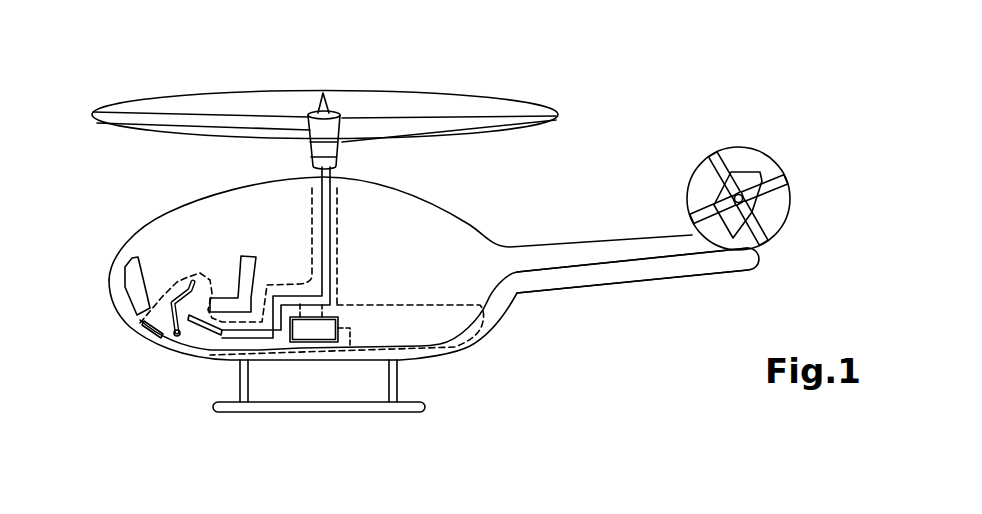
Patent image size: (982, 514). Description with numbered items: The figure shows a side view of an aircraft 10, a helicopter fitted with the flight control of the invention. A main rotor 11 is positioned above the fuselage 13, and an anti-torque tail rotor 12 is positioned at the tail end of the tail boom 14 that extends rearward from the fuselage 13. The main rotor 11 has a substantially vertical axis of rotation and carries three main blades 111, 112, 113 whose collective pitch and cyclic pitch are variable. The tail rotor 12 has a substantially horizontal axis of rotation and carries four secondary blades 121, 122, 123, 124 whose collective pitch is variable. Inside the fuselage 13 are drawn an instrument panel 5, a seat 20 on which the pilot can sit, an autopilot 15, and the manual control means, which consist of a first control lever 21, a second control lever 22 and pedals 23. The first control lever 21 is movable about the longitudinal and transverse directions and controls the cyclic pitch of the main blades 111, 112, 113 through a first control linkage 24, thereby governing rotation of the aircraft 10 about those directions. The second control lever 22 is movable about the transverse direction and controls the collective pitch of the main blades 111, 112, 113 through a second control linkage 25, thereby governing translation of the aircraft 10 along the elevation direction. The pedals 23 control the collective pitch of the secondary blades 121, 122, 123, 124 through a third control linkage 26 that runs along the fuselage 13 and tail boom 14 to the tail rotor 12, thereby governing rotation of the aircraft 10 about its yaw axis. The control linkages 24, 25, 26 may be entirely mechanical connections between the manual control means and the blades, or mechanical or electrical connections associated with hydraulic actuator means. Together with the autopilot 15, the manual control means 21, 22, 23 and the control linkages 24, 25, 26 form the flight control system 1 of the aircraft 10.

The flight control system 1 is at (425, 305).
The instrument panel 5 is at (128, 280).
The aircraft 10 is at (369, 423).
The main rotor 11 is at (492, 98).
The main blade 111 is at (128, 118).
The main blade 112 is at (477, 134).
The main blade 113 is at (322, 92).
The anti-torque tail rotor 12 is at (791, 215).
The secondary blade 121 is at (703, 217).
The secondary blade 122 is at (722, 157).
The secondary blade 123 is at (778, 178).
The secondary blade 124 is at (760, 240).
The fuselage 13 is at (478, 347).
The tail boom 14 is at (653, 277).
The autopilot 15 is at (305, 342).
The seat 20 is at (238, 278).
The first control lever 21 is at (188, 277).
The second control lever 22 is at (203, 335).
The pedals 23 is at (141, 325).
The first control linkage 24 is at (332, 238).
The second control linkage 25 is at (322, 212).
The third control linkage 26 is at (484, 300).